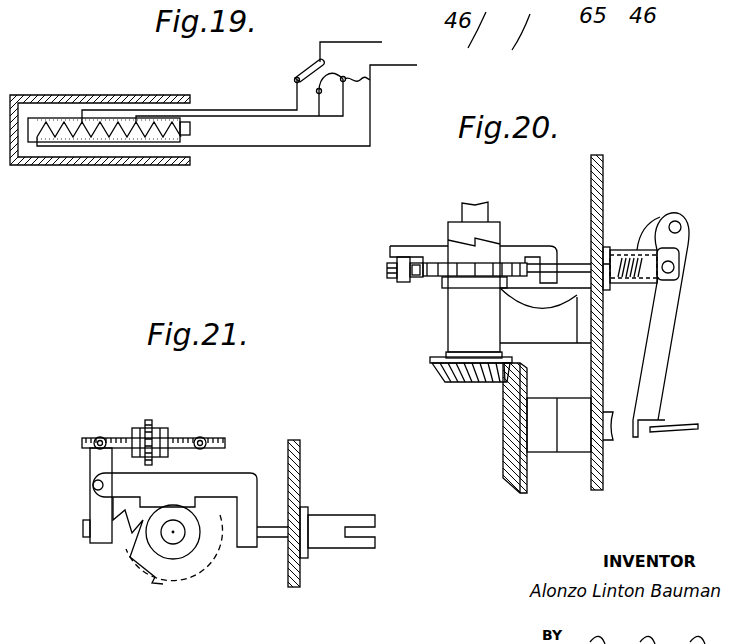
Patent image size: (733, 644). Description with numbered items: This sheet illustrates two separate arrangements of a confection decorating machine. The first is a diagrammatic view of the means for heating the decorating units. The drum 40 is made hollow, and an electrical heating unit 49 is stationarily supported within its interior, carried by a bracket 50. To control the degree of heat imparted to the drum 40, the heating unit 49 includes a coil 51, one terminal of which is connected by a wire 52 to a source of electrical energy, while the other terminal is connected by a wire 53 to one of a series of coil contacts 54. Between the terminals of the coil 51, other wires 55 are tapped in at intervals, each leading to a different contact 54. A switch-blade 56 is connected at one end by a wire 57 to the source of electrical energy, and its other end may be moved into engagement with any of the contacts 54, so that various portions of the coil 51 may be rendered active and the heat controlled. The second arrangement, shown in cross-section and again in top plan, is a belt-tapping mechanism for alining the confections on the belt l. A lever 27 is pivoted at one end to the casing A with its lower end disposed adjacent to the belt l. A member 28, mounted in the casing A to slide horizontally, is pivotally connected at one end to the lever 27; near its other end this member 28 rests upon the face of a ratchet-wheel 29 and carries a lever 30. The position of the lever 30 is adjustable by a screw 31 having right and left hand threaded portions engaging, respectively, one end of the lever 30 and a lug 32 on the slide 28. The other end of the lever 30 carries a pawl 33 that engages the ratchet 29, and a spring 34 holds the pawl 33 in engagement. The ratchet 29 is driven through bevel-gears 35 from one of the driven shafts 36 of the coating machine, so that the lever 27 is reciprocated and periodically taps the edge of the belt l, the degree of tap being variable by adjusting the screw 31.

In FIG. 19, the drum 40 is at (53, 165).
In FIG. 19, the electrical heating unit 49 is at (100, 142).
In FIG. 19, the coil 51 is at (102, 123).
In FIG. 19, the bracket 50 is at (217, 110).
In FIG. 19, the wires 55 is at (272, 110).
In FIG. 19, the wire 52 is at (268, 147).
In FIG. 19, the wire 53 is at (287, 118).
In FIG. 19, the coil contacts 54 is at (296, 76).
In FIG. 19, the switch-blade 56 is at (298, 76).
In FIG. 19, the wire 57 is at (342, 42).
In FIG. 20, the ratchet-wheel 29 is at (452, 272).
In FIG. 21, the ratchet-wheel 29 is at (174, 573).
In FIG. 20, the pawl 33 is at (417, 278).
In FIG. 21, the pawl 33 is at (113, 538).
In FIG. 20, the member 28 is at (546, 246).
In FIG. 21, the member 28 is at (167, 475).
In FIG. 20, the bevel-gears 35 is at (473, 380).
In FIG. 20, the casing A is at (606, 163).
In FIG. 21, the casing A is at (297, 455).
In FIG. 20, the driven shaft 36 is at (612, 440).
In FIG. 20, the spring 34 is at (623, 255).
In FIG. 20, the lever 27 is at (679, 248).
In FIG. 20, the belt l is at (680, 433).
In FIG. 21, the lever 30 is at (95, 462).
In FIG. 21, the lug 32 is at (203, 458).
In FIG. 21, the screw 31 is at (120, 437).